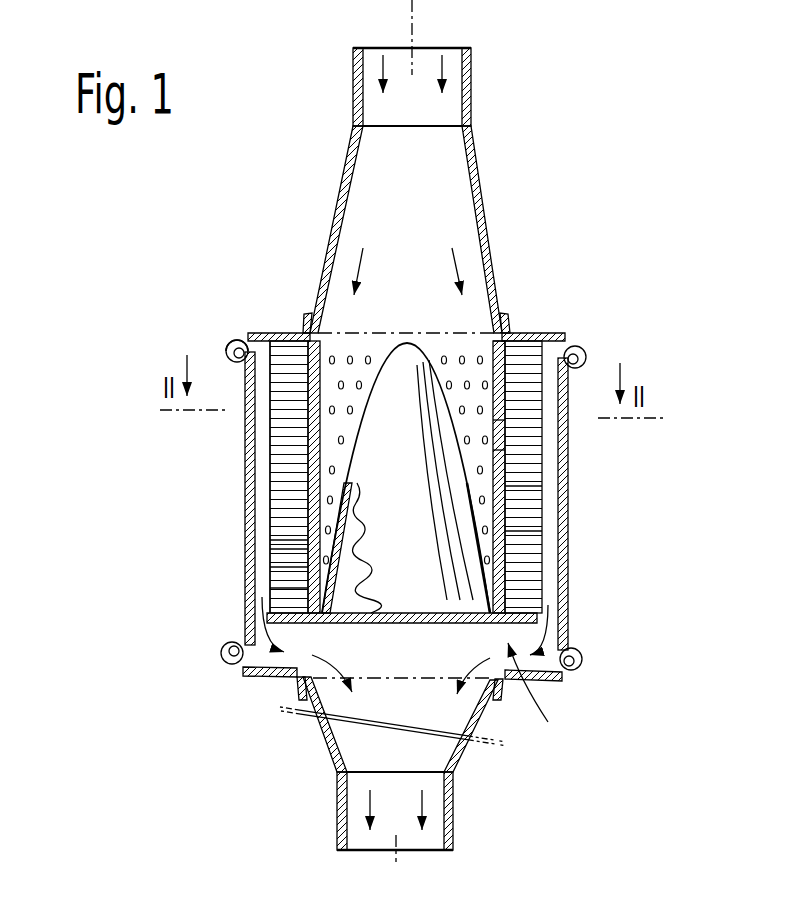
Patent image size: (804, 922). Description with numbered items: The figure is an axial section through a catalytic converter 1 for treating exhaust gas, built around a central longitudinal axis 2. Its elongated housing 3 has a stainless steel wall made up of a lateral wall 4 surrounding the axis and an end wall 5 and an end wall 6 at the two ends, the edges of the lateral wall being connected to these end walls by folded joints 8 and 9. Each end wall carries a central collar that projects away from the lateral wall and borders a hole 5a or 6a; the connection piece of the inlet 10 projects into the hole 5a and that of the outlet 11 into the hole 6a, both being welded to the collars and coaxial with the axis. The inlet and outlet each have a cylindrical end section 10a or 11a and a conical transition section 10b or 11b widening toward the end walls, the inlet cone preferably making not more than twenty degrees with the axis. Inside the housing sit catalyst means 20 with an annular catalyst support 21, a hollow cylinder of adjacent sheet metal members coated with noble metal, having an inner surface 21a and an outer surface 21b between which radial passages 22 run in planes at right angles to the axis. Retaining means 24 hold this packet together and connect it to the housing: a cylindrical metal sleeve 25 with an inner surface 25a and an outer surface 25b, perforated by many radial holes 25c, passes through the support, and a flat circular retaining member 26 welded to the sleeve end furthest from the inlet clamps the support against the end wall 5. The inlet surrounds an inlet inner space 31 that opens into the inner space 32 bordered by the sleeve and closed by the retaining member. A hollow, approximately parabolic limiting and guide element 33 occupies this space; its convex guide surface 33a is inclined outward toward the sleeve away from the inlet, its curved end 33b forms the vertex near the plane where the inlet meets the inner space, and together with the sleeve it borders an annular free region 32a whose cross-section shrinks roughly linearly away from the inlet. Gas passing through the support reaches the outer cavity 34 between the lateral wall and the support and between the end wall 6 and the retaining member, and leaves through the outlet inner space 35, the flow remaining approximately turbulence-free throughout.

The catalytic converter 1 is at (222, 326).
The longitudinal axis 2 is at (412, 20).
The housing 3 is at (247, 323).
The lateral wall 4 is at (245, 432).
The end wall 5 is at (273, 328).
The hole 5a is at (313, 312).
The end wall 6 is at (270, 675).
The hole 6a is at (328, 715).
The folded joint 8 is at (227, 343).
The folded joint 9 is at (230, 658).
The inlet 10 is at (352, 93).
The cylindrical end section 10a is at (353, 62).
The transition section 10b is at (337, 197).
The outlet 11 is at (338, 807).
The cylindrical end section 11a is at (337, 833).
The transition section 11b is at (332, 748).
The catalyst means 20 is at (258, 467).
The catalyst support 21 is at (262, 498).
The inner surface 21a is at (307, 518).
The outer surface 21b is at (268, 545).
The passages 22 is at (272, 568).
The retaining means 24 is at (545, 679).
The sleeve 25 is at (508, 402).
The inner surface 25a is at (498, 430).
The outer surface 25b is at (497, 457).
The radial holes 25c is at (470, 378).
The retaining member 26 is at (457, 626).
The inlet inner space 31 is at (453, 118).
The inner space 32 is at (510, 537).
The inner space region 32a is at (512, 492).
The limiting and/or guide element 33 is at (492, 584).
The limiting and/or guide surface 33a is at (500, 560).
The end of the limiting and/or guide member 33b is at (405, 340).
The outer cavity 34 is at (547, 535).
The outlet inner space 35 is at (410, 848).